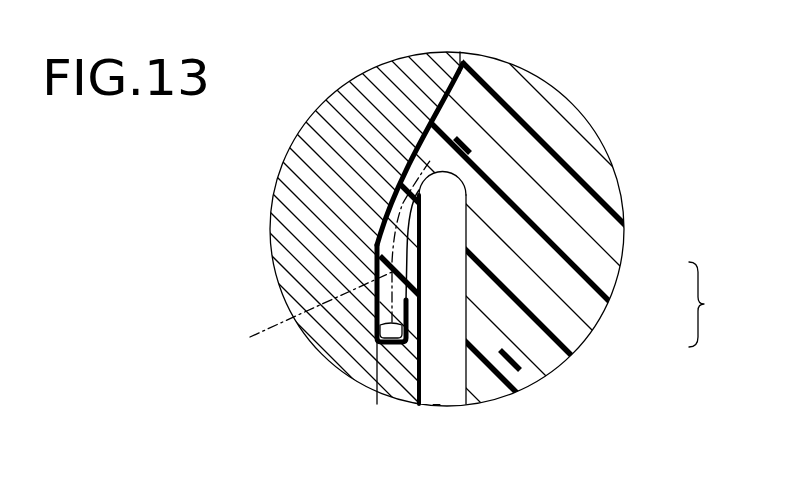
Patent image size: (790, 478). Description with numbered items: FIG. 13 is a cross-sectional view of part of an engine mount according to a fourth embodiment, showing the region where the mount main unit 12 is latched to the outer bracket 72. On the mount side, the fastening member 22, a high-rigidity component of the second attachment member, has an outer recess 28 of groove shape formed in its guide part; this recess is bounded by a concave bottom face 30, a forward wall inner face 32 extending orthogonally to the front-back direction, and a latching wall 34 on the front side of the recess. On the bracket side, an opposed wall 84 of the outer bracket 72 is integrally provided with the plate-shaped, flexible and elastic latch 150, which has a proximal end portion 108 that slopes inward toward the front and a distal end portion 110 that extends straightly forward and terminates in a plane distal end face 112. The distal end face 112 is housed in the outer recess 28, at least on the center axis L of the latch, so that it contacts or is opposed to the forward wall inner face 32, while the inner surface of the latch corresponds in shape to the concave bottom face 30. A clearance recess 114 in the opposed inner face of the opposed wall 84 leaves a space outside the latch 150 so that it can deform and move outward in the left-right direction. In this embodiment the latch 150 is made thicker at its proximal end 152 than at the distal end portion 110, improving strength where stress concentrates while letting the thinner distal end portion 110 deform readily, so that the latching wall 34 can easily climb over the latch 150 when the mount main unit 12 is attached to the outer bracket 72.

The mount main unit 12 is at (550, 303).
The fastening member 22 is at (302, 195).
The outer recess 28 is at (433, 148).
The concave bottom face 30 is at (375, 232).
The forward wall inner face 32 is at (378, 325).
The latching wall 34 is at (405, 368).
The outer bracket 72 is at (449, 58).
The opposed wall 84 is at (507, 367).
The proximal end portion 108 is at (410, 218).
The distal end portion 110 is at (396, 294).
The distal end face 112 is at (380, 325).
The clearance recess 114 is at (462, 226).
The latch 150 is at (562, 239).
The proximal end 152 is at (457, 142).
The center axis L is at (310, 308).